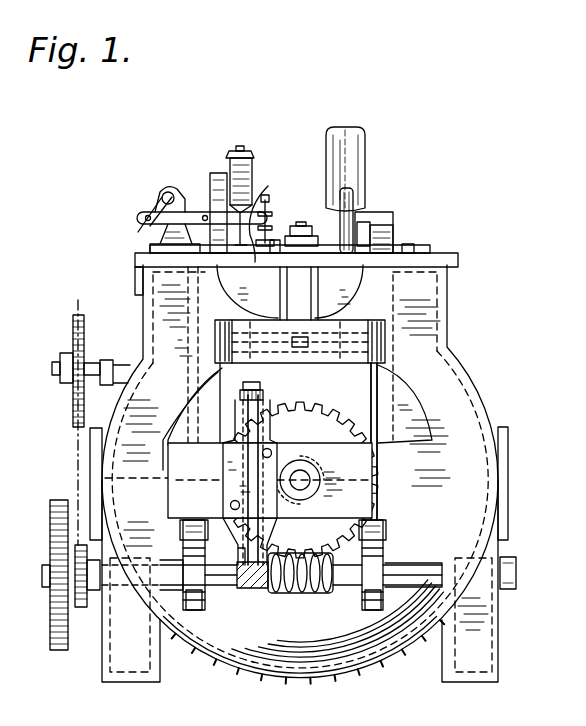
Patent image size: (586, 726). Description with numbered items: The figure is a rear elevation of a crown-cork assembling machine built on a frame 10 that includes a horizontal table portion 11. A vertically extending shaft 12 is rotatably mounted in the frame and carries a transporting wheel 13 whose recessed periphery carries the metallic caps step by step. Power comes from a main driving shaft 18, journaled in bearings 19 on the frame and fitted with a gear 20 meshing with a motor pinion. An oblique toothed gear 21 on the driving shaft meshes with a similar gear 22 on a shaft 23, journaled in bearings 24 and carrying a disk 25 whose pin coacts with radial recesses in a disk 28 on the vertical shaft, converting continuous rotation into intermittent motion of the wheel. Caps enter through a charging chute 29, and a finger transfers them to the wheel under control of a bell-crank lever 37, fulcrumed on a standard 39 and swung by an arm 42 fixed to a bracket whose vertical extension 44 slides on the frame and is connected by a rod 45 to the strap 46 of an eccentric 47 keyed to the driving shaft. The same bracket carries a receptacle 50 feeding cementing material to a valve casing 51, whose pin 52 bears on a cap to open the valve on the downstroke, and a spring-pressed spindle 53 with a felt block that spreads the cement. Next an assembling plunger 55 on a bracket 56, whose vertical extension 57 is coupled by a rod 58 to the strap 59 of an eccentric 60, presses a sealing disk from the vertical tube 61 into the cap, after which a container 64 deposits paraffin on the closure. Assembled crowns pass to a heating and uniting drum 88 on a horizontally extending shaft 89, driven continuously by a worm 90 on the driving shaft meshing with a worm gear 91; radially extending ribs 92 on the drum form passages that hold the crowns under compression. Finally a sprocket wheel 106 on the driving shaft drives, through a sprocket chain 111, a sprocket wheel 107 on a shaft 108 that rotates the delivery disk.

The frame 10 is at (478, 398).
The horizontal table portion 11 is at (445, 254).
The vertically extending shaft 12 is at (300, 227).
The transporting wheel 13 is at (274, 250).
The main driving shaft 18 is at (426, 565).
The bearings 19 is at (131, 600).
The gear 20 is at (50, 624).
The oblique toothed gear 21 is at (252, 592).
The gear 22 is at (238, 556).
The shaft 23 is at (237, 410).
The bearings 24 is at (242, 392).
The disk 25 is at (233, 320).
The disk 28 is at (270, 318).
The charging chute 29 is at (218, 180).
The bell-crank lever 37 is at (167, 207).
The standard 39 is at (164, 236).
The arm 42 is at (192, 212).
The vertical extension 44 is at (188, 316).
The rod 45 is at (196, 397).
The strap 46 is at (183, 524).
The eccentric 47 is at (194, 608).
The receptacle 50 is at (254, 154).
The valve casing 51 is at (266, 215).
The pin 52 is at (246, 294).
The spring-pressed spindle 53 is at (270, 201).
The assembling plunger 55 is at (369, 228).
The bracket 56 is at (391, 216).
The vertical extension 57 is at (394, 238).
The rod 58 is at (371, 388).
The strap 59 is at (380, 546).
The eccentric 60 is at (364, 594).
The vertical tube 61 is at (354, 200).
The container 64 is at (366, 153).
The heating and uniting drum 88 is at (245, 671).
The horizontally extending shaft 89 is at (300, 478).
The worm 90 is at (304, 596).
The worm gear 91 is at (331, 404).
The radially extending ribs 92 is at (334, 672).
The sprocket wheel 106 is at (83, 607).
The sprocket wheel 107 is at (73, 330).
The shaft 108 is at (89, 365).
The sprocket chain 111 is at (76, 458).